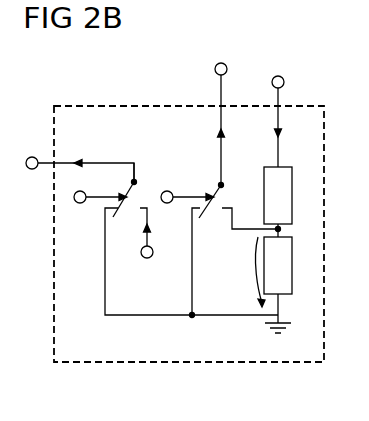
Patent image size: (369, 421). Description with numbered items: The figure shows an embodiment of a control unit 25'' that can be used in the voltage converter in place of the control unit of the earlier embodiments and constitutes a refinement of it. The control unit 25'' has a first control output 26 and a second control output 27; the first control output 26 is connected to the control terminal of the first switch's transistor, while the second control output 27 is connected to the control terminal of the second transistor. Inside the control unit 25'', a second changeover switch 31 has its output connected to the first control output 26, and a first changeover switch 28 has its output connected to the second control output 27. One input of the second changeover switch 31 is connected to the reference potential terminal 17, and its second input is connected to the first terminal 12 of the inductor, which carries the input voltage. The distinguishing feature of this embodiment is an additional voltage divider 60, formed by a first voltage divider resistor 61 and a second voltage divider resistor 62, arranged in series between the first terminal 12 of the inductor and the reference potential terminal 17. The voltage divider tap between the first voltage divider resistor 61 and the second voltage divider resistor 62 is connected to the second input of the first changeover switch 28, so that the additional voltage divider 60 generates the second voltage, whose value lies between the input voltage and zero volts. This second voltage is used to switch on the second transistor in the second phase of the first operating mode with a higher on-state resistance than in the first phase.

The control unit 25'' is at (189, 208).
The first control output 26 is at (53, 162).
The second control output 27 is at (221, 106).
The first terminal of the inductor 12 is at (141, 252).
The second changeover switch 31 is at (138, 172).
The first changeover switch 28 is at (224, 183).
The first voltage divider resistor 61 is at (280, 175).
The additional voltage divider 60 is at (291, 231).
The second voltage divider resistor 62 is at (284, 275).
The reference potential terminal 17 is at (266, 323).